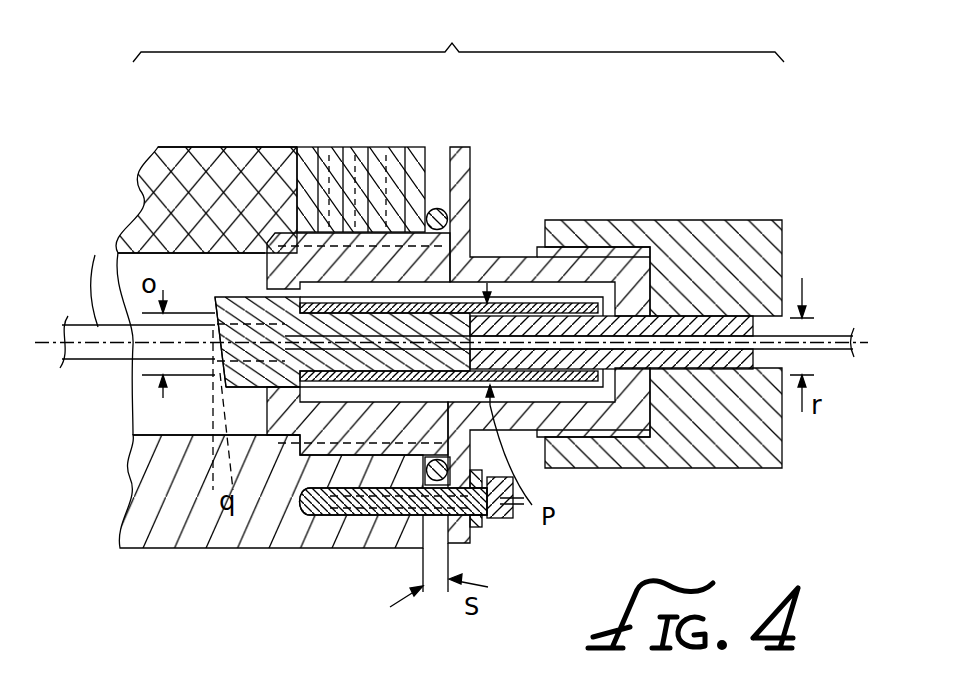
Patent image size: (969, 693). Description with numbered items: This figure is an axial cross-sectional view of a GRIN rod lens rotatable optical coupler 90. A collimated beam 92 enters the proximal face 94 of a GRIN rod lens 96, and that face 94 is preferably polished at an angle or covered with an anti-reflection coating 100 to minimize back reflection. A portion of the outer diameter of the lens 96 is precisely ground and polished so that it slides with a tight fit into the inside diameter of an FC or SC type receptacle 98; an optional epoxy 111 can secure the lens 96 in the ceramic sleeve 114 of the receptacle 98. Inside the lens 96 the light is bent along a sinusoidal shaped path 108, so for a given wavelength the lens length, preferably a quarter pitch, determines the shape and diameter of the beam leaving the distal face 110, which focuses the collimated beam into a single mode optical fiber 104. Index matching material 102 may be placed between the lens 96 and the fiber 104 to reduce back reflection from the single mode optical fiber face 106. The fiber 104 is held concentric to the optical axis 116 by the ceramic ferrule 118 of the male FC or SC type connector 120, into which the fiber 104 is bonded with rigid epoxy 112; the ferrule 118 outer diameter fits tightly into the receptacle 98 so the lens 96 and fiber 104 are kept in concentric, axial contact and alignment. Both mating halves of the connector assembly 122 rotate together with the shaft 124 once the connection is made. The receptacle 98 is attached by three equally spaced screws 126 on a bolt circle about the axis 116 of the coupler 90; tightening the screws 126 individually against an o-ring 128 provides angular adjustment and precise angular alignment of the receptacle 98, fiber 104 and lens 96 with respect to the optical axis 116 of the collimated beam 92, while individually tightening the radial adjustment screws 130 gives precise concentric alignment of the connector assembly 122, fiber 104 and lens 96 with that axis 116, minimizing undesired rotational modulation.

The GRIN rod lens rotatable optical coupler 90 is at (458, 35).
The collimated beam 92 is at (128, 265).
The proximal face 94 is at (212, 372).
The GRIN rod lens 96 is at (178, 156).
The receptacle 98 is at (500, 257).
The anti-reflection coating 100 is at (222, 388).
The index matching material 102 is at (300, 462).
The single mode optical fiber 104 is at (828, 340).
The single mode optical fiber face 106 is at (560, 380).
The sinusoidal shaped path 108 is at (230, 296).
The distal face 110 is at (343, 517).
The epoxy 111 is at (322, 232).
The rigid epoxy 112 is at (637, 343).
The ceramic sleeve 114 is at (292, 280).
The optical axis 116 is at (50, 342).
The ceramic ferrule 118 is at (553, 333).
The FC or SC type connector 120 is at (741, 430).
The connector assembly 122 is at (724, 220).
The shaft 124 is at (158, 210).
The screws 126 is at (450, 472).
The o-ring 128 is at (440, 209).
The radial adjustment screws 130 is at (388, 232).